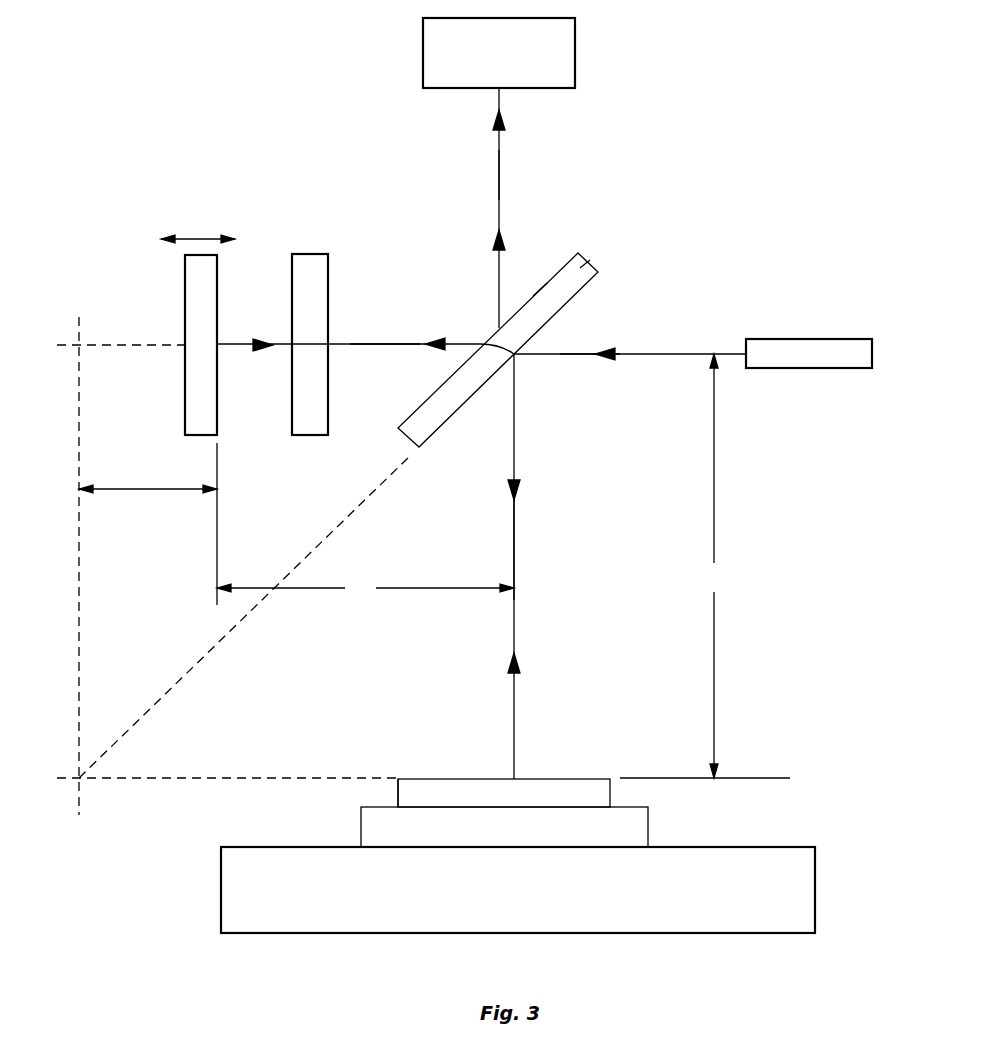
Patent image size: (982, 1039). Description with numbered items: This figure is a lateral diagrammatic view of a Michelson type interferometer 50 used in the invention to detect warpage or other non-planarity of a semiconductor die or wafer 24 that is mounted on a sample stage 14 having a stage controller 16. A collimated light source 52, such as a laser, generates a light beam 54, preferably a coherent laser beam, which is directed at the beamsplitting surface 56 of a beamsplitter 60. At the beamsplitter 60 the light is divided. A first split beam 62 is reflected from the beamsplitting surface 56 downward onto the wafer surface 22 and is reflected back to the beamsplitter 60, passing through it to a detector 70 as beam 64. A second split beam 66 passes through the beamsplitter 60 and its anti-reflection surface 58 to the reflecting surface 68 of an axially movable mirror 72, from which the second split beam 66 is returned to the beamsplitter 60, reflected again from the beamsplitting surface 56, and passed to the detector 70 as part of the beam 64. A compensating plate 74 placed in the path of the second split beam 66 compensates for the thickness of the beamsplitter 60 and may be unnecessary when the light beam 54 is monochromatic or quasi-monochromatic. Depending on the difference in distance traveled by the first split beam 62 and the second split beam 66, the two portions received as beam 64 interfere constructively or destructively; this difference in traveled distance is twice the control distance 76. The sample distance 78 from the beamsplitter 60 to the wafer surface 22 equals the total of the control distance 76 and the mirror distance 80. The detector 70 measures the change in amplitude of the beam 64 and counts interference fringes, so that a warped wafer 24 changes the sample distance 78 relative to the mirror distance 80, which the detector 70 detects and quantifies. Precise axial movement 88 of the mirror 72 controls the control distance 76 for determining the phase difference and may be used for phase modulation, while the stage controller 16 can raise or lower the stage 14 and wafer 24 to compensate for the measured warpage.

The sample stage 14 is at (638, 825).
The stage controller 16 is at (518, 890).
The wafer surface 22 is at (458, 777).
The semiconductor die or wafer 24 is at (407, 793).
The interferometer 50 is at (708, 117).
The collimated light source 52 is at (790, 343).
The light beam 54 is at (562, 357).
The beamsplitting surface 56 is at (568, 305).
The anti-reflection surface 58 is at (547, 283).
The beamsplitter 60 is at (580, 268).
The first split beam 62 is at (515, 542).
The beam to detector 64 is at (499, 190).
The second split beam 66 is at (382, 343).
The reflecting surface 68 is at (218, 270).
The detector 70 is at (563, 43).
The axially movable mirror 72 is at (192, 318).
The compensating plate 74 is at (312, 258).
The control distance 76 is at (123, 490).
The sample distance 78 is at (714, 566).
The mirror distance 80 is at (365, 588).
The axial movement 88 is at (200, 238).